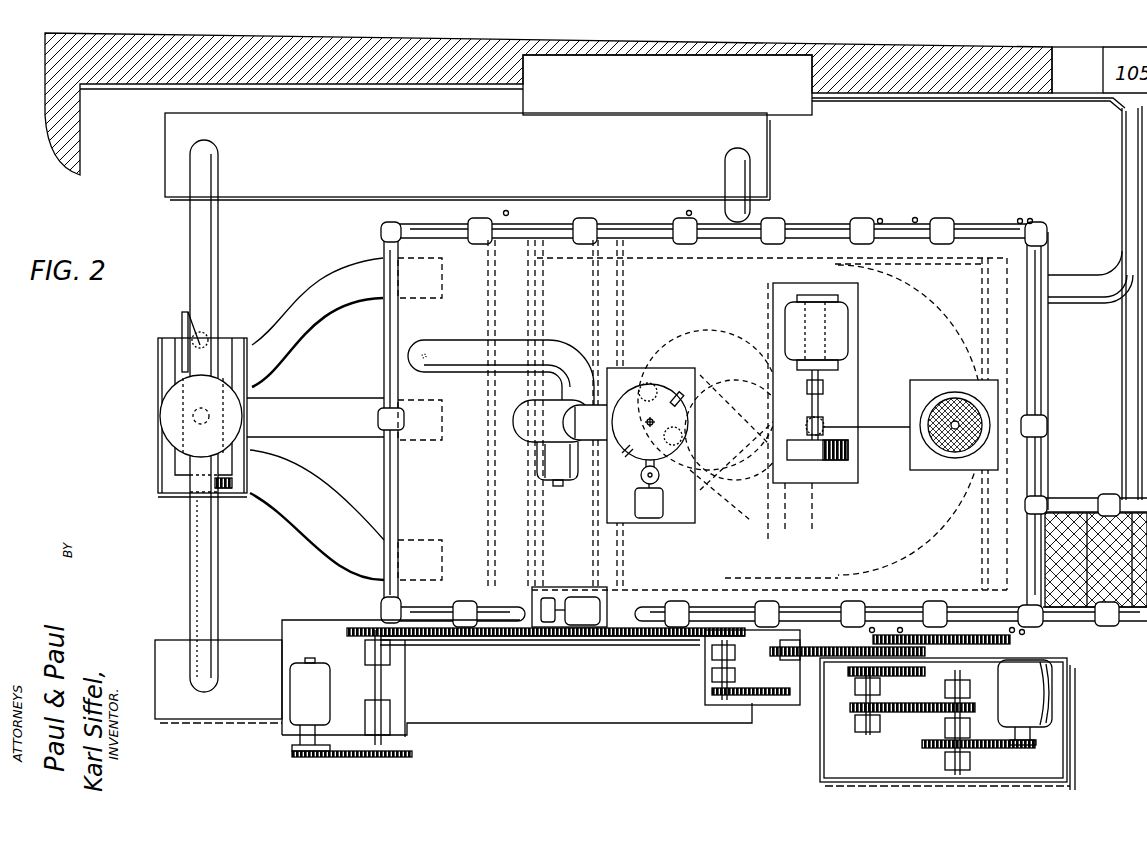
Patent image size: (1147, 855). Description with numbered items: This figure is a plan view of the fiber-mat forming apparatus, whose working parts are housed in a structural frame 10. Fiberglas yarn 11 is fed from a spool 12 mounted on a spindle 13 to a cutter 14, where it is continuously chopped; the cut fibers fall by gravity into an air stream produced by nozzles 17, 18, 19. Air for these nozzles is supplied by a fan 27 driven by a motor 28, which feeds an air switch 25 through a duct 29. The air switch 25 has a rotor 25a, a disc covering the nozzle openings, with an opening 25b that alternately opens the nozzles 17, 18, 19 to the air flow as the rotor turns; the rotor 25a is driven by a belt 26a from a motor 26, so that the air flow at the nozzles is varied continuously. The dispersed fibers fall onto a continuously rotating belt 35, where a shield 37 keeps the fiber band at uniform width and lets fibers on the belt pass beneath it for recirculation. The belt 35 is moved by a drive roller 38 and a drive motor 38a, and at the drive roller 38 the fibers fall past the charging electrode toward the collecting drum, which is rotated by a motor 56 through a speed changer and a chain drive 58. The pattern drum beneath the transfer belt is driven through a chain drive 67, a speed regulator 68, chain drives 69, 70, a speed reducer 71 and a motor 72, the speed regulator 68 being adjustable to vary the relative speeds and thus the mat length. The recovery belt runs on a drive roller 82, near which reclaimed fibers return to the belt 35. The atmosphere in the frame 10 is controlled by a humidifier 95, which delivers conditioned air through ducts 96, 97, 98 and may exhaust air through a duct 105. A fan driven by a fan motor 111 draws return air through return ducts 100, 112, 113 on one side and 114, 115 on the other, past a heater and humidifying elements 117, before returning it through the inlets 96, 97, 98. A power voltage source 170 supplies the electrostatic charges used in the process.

The structural frame 10 is at (962, 212).
The Fiberglas yarn 11 is at (888, 430).
The spool 12 is at (945, 447).
The spindle 13 is at (955, 410).
The cutter 14 is at (825, 420).
The nozzle 17 is at (728, 503).
The nozzle 18 is at (728, 476).
The nozzle 19 is at (728, 411).
The air switch 25 is at (648, 386).
The rotor 25a is at (700, 400).
The opening 25b is at (627, 352).
The motor 26 is at (662, 506).
The belt 26a is at (661, 472).
The fan 27 is at (520, 421).
The motor 28 is at (553, 459).
The duct 29 is at (600, 406).
The belt 35 is at (957, 270).
The shield 37 is at (910, 420).
The drive roller 38 is at (605, 640).
The drive motor 38a is at (580, 598).
The motor 56 is at (298, 692).
The chain drive 58 is at (448, 637).
The chain drive 67 is at (665, 637).
The speed regulator 68 is at (752, 667).
The chain drive 69 is at (810, 657).
The chain drive 70 is at (885, 676).
The speed reducer 71 is at (926, 749).
The motor 72 is at (1010, 690).
The drive roller 82 is at (1000, 641).
The humidifier 95 is at (155, 365).
The duct 96 is at (325, 526).
The duct 97 is at (342, 406).
The duct 98 is at (358, 300).
The return duct 100 is at (737, 181).
The duct 105 is at (1085, 284).
The fan motor 111 is at (210, 340).
The return duct 112 is at (328, 180).
The return duct 113 is at (205, 234).
The return duct 114 is at (215, 712).
The return duct 115 is at (205, 584).
The humidifying elements 117 is at (221, 478).
The power voltage source 170 is at (667, 85).